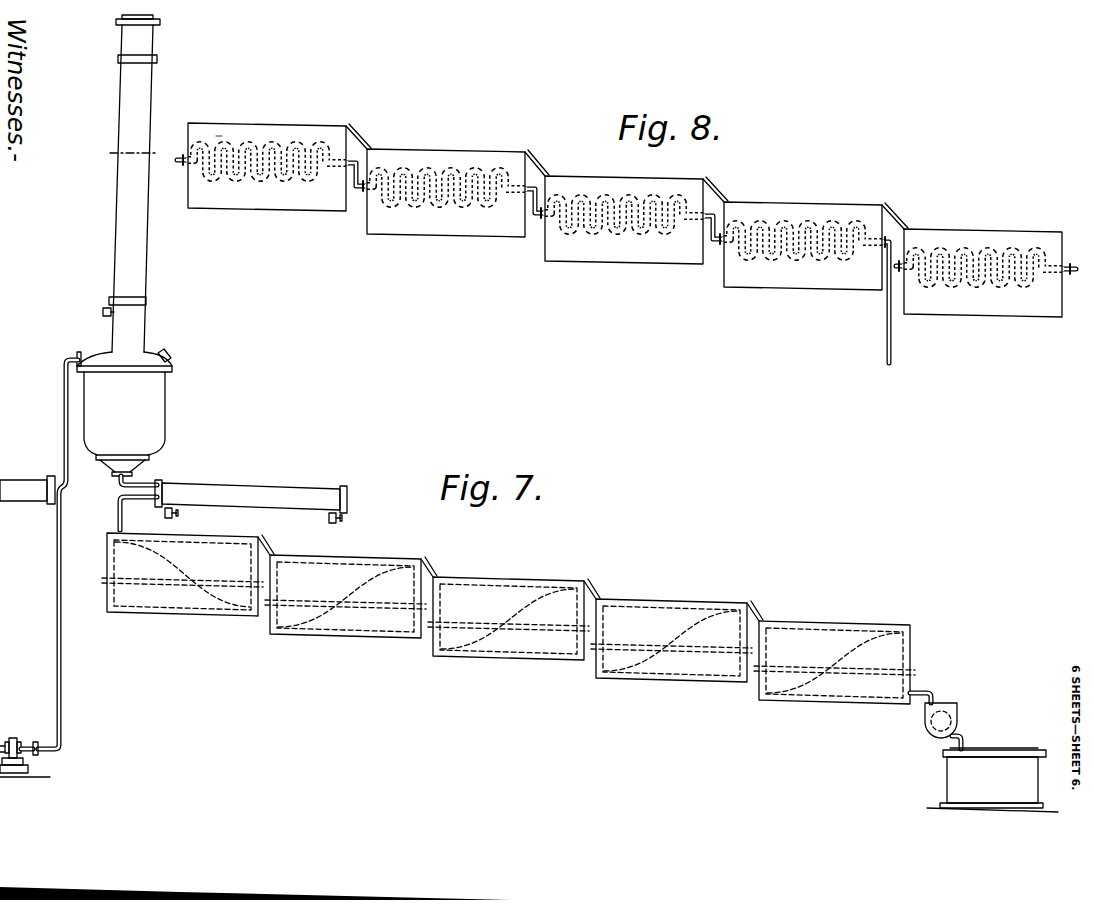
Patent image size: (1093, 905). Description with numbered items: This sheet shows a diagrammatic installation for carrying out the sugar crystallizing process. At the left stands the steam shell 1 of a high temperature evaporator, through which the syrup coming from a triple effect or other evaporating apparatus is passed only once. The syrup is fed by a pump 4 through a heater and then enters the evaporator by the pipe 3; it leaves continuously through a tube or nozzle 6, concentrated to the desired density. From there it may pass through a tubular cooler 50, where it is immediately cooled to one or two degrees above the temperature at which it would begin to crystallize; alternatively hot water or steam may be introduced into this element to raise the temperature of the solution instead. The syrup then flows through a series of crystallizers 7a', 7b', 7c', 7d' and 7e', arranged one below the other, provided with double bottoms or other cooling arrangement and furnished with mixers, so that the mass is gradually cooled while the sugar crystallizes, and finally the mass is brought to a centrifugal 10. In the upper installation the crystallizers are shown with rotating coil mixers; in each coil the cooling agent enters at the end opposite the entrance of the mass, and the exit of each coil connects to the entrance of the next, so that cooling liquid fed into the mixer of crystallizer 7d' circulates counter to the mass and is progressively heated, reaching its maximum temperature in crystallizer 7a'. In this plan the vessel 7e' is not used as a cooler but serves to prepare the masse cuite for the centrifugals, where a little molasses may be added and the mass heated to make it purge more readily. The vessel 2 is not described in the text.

In FIG. 7, the steam shell 1 is at (137, 274).
In FIG. 7, the vessel 2 is at (124, 412).
In FIG. 7, the pipe 3 is at (64, 412).
In FIG. 8, the pump 4 is at (218, 131).
In FIG. 7, the pump 4 is at (16, 738).
In FIG. 7, the tube or nozzle 6 is at (121, 486).
In FIG. 7, the tubular cooler 50 is at (251, 501).
In FIG. 7, the centrifugal 10 is at (992, 780).
In FIG. 8, the crystallizer 7a' is at (267, 167).
In FIG. 7, the crystallizer 7a' is at (182, 574).
In FIG. 8, the crystallizer 7b' is at (446, 193).
In FIG. 7, the crystallizer 7b' is at (345, 596).
In FIG. 8, the crystallizer 7c' is at (624, 220).
In FIG. 7, the crystallizer 7c' is at (508, 618).
In FIG. 8, the crystallizer 7d' is at (803, 246).
In FIG. 7, the crystallizer 7d' is at (671, 640).
In FIG. 8, the crystallizer 7e' is at (983, 273).
In FIG. 7, the crystallizer 7e' is at (834, 662).